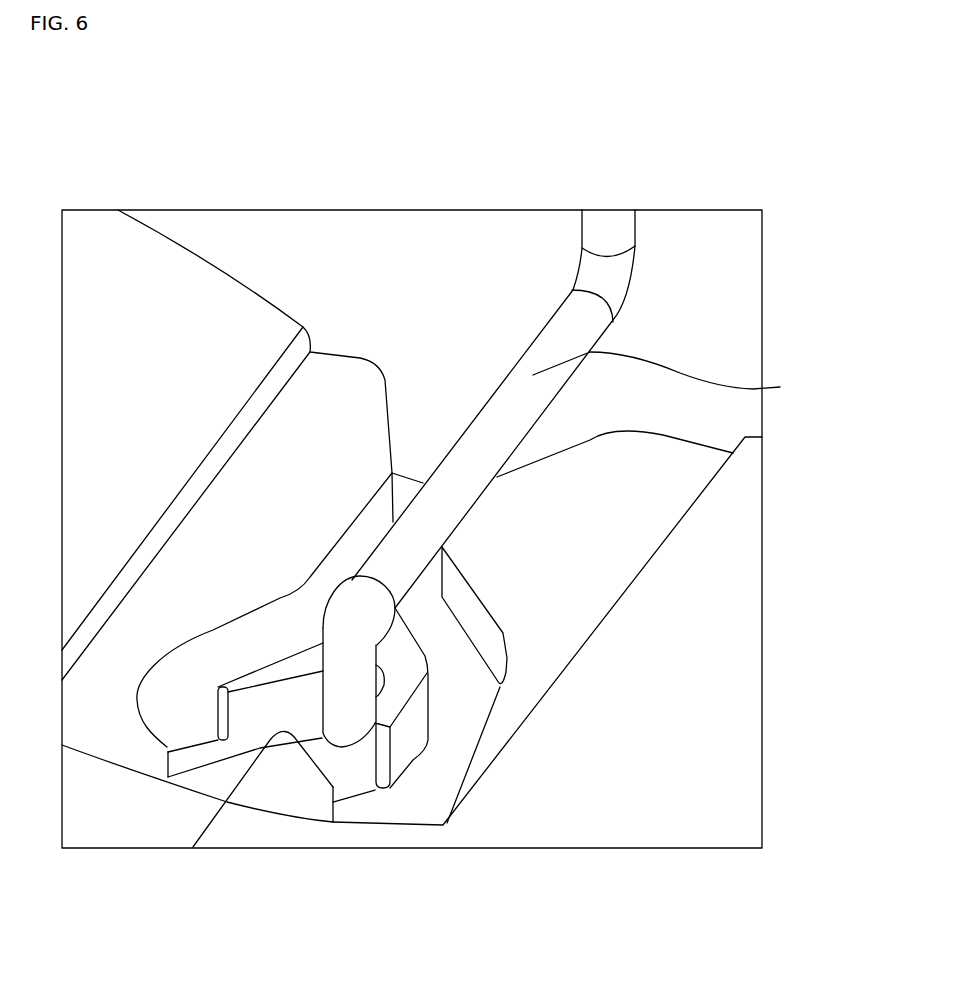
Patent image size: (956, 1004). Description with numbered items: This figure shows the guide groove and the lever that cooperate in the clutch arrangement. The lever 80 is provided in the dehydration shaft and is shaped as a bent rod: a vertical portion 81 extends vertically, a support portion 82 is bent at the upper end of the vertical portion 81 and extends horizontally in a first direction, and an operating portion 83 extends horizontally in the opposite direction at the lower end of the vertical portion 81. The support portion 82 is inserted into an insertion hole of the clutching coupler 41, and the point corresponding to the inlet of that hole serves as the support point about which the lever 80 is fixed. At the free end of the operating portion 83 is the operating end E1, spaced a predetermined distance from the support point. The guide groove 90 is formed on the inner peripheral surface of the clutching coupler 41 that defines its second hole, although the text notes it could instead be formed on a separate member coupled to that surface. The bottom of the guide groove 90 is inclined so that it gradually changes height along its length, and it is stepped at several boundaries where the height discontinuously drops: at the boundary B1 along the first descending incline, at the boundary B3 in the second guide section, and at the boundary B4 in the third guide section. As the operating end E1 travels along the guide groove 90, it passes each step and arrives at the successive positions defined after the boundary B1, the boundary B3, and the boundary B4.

The clutching coupler 41 is at (675, 643).
The lever 80 is at (510, 336).
The vertical portion 81 is at (780, 387).
The support portion 82 is at (613, 232).
The operating portion 83 is at (358, 712).
The guide groove 90 is at (467, 735).
The boundary B1 is at (350, 796).
The boundary B3 is at (198, 747).
The boundary B4 is at (313, 767).
The operating end E1 is at (333, 787).